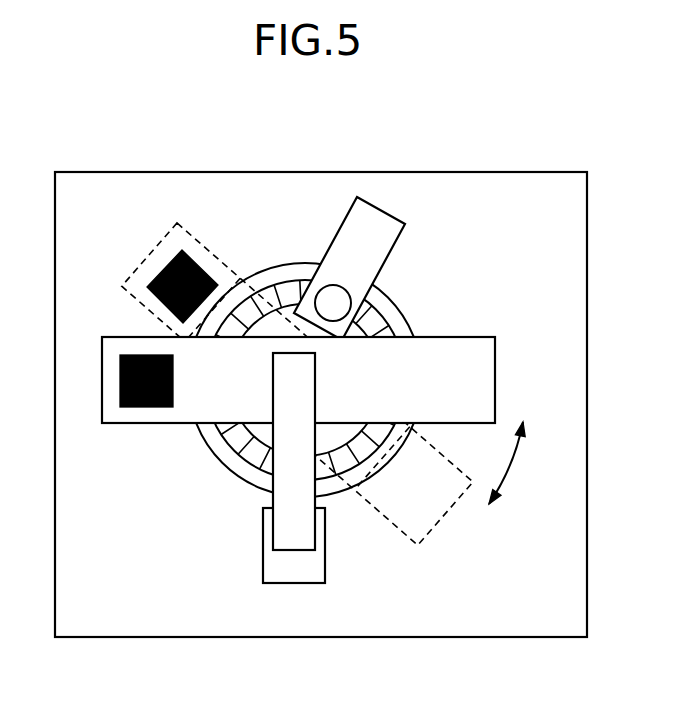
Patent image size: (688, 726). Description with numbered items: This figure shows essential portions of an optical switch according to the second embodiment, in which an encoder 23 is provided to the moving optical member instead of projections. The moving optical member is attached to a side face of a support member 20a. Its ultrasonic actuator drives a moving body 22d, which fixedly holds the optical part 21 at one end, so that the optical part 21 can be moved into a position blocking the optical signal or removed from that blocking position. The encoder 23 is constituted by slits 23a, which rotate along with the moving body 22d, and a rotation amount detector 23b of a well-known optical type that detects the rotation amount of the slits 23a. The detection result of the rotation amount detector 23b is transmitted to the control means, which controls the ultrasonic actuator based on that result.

The support member 20a is at (348, 637).
The optical part 21 is at (128, 354).
The moving body 22d is at (477, 338).
The encoder 23 is at (324, 317).
The slits 23a is at (290, 307).
The rotation amount detector 23b is at (405, 238).